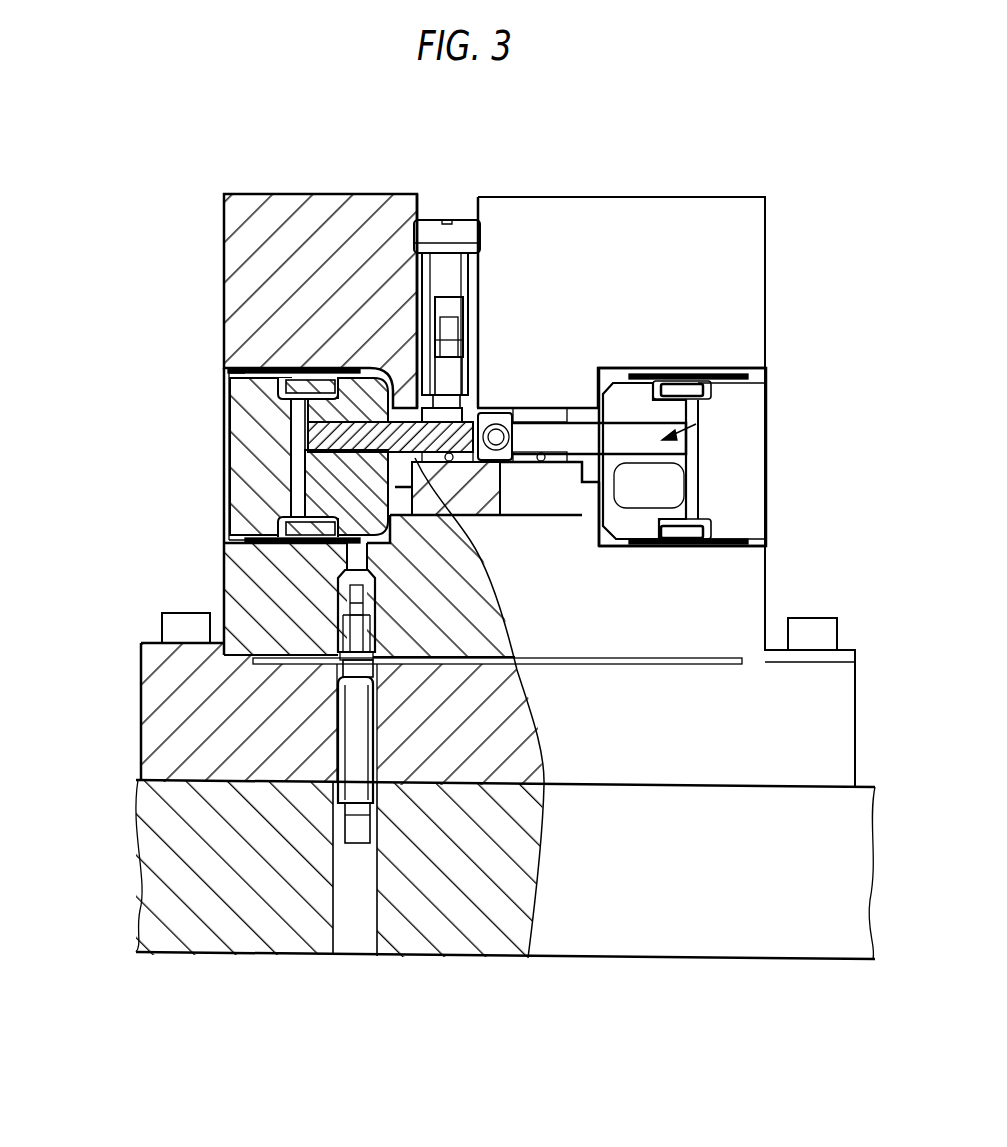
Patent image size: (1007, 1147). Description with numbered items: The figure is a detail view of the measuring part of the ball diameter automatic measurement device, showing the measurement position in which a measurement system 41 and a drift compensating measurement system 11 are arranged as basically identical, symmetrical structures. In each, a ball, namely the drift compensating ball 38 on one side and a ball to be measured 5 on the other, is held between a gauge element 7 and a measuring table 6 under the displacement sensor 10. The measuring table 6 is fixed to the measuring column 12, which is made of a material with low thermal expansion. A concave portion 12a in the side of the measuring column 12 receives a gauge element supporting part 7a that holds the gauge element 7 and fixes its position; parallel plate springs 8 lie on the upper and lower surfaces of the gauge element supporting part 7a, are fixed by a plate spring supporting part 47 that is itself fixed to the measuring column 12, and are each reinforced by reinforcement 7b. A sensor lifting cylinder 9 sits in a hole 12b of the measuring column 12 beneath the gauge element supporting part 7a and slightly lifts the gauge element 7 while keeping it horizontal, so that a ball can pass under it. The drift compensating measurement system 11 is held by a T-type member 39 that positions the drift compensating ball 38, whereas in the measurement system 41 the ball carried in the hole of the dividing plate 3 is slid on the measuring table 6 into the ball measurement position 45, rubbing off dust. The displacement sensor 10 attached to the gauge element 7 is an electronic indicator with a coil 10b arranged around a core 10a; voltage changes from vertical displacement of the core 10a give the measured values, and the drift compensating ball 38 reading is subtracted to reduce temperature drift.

The dividing plate 3 is at (423, 458).
The ball to be measured 5 is at (481, 420).
The measuring table 6 is at (745, 561).
The gauge element 7 is at (308, 436).
The gauge element supporting part 7a is at (623, 389).
The reinforcement 7b is at (282, 397).
The parallel plate springs 8 is at (368, 445).
The sensor lifting cylinder 9 is at (352, 748).
The displacement sensor 10 is at (441, 267).
The core 10a is at (450, 333).
The coil 10b is at (433, 308).
The drift compensating measurement system 11 is at (749, 426).
The measuring column 12 is at (752, 562).
The concave portion 12a is at (712, 388).
The hole 12b is at (347, 620).
The drift compensating ball 38 is at (600, 485).
The T-type member 39 is at (541, 452).
The measurement system 41 is at (296, 490).
The ball measurement position 45 is at (479, 734).
The plate spring supporting part 47 is at (696, 424).